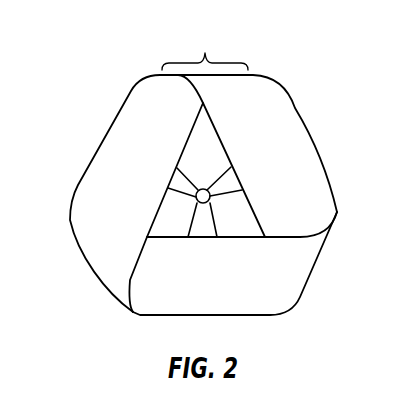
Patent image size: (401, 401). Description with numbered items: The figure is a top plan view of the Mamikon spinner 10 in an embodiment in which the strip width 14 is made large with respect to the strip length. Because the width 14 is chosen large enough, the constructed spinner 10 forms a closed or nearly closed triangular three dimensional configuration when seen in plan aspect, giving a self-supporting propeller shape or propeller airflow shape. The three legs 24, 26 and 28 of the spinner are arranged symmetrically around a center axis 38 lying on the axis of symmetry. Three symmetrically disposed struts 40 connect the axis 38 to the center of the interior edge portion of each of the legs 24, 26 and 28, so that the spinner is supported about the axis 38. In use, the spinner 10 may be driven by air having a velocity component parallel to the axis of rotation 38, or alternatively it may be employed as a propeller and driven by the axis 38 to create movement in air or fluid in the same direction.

The spinner 10 is at (317, 90).
The width 14 is at (205, 47).
The leg 24 is at (93, 177).
The leg 26 is at (157, 285).
The leg 28 is at (317, 176).
The center axis 38 is at (206, 190).
The struts 40 is at (178, 182).